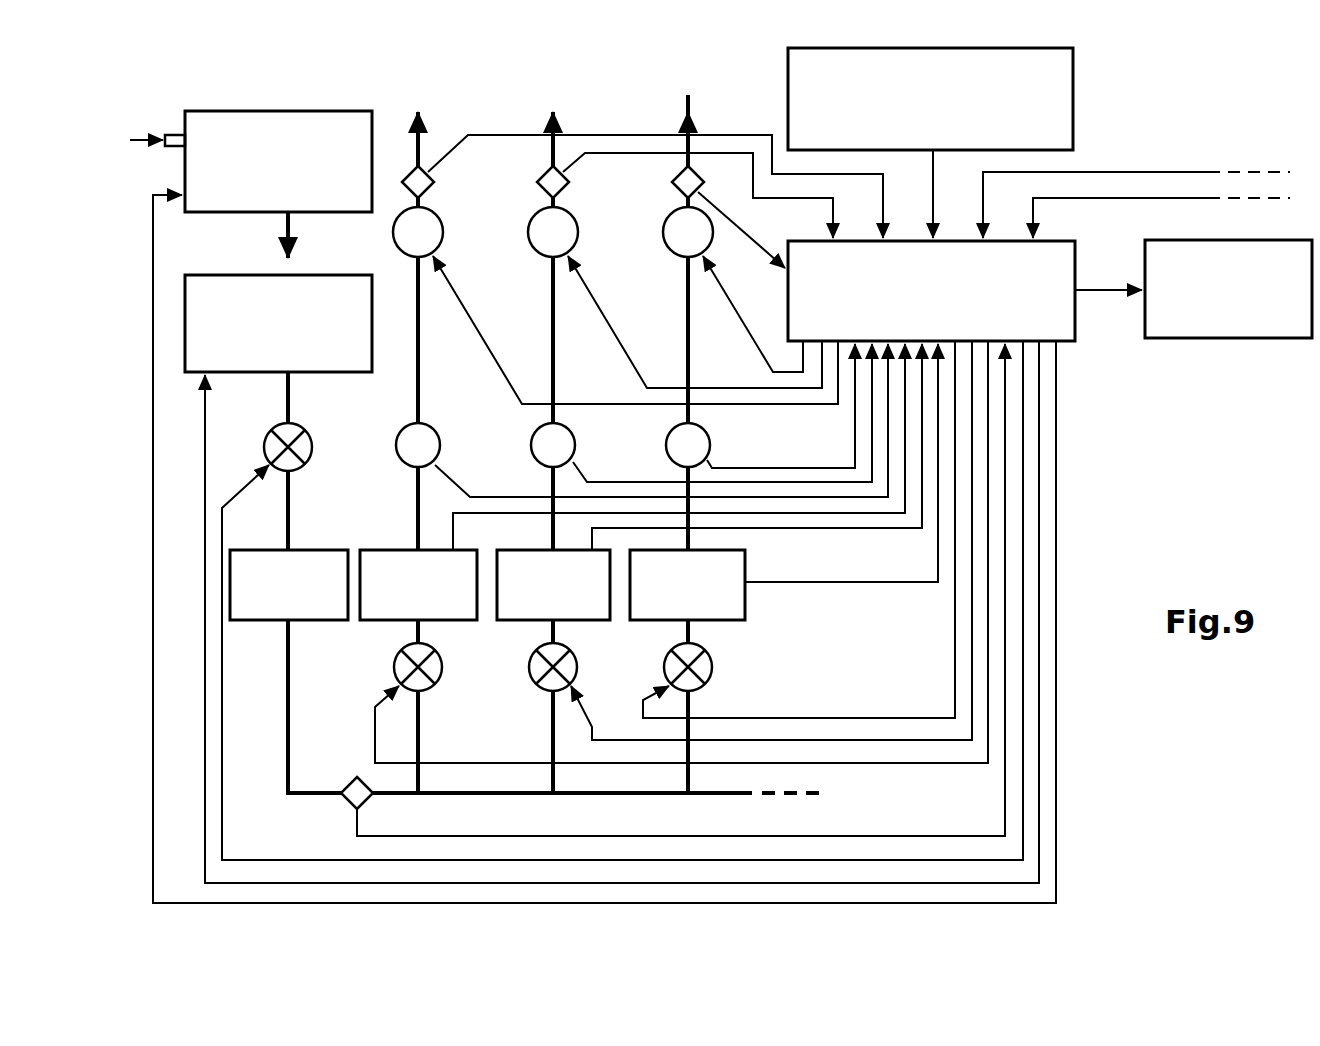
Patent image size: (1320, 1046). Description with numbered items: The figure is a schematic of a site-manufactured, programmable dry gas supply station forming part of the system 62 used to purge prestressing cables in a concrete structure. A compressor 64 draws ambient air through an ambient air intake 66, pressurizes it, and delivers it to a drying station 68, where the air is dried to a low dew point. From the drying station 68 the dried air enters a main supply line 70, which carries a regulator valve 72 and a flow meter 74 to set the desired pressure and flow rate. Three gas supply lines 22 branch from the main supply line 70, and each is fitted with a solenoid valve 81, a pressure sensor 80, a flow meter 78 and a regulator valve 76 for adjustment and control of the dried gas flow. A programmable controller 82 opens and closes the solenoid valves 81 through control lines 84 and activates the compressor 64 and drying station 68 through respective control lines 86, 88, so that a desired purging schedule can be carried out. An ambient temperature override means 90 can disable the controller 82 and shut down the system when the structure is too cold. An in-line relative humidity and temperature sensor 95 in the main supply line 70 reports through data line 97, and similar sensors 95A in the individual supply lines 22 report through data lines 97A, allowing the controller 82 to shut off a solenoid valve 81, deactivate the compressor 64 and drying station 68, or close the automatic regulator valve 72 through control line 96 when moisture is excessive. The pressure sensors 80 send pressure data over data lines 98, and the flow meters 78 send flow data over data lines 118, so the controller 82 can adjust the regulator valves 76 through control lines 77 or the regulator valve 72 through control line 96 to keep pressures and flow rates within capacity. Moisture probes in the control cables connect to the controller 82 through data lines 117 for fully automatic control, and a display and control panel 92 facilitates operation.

The gas supply lines 22 is at (675, 123).
The system 62 is at (751, 60).
The compressor 64 is at (372, 94).
The ambient air intake 66 is at (175, 133).
The drying station 68 is at (215, 275).
The main supply line 70 is at (290, 407).
The regulator valve 72 is at (313, 445).
The flow meter 74 is at (320, 552).
The regulator valves 76 is at (664, 670).
The control lines 77 is at (903, 719).
The flow meters 78 is at (466, 621).
The pressure sensors 80 is at (666, 451).
The solenoid valve 81 is at (436, 246).
The programmable controller 82 is at (1077, 262).
The control lines 84 is at (776, 373).
The control line 86 is at (1040, 545).
The control line 88 is at (1057, 474).
The ambient temperature override means 90 is at (1073, 105).
The display and control panel 92 is at (1233, 338).
The relative humidity and temperature sensor 95 is at (367, 803).
The relative humidity and temperature sensors 95A is at (541, 186).
The control line 96 is at (222, 805).
The data line 97 is at (778, 836).
The data lines 97A is at (752, 172).
The data lines 98 is at (784, 496).
The data lines 117 is at (1120, 200).
The data lines 118 is at (780, 514).